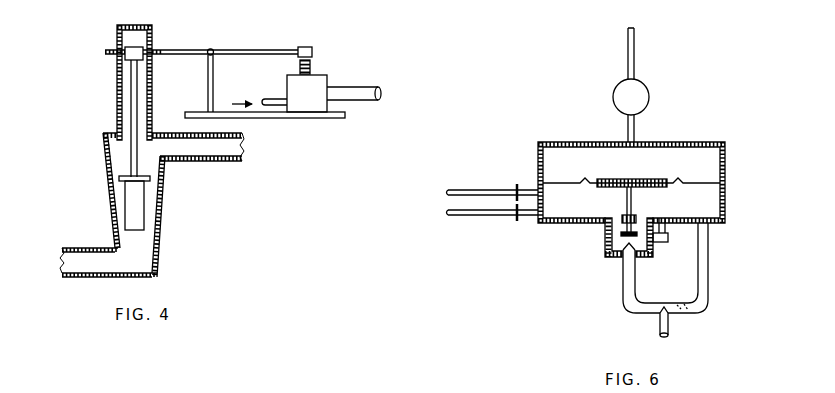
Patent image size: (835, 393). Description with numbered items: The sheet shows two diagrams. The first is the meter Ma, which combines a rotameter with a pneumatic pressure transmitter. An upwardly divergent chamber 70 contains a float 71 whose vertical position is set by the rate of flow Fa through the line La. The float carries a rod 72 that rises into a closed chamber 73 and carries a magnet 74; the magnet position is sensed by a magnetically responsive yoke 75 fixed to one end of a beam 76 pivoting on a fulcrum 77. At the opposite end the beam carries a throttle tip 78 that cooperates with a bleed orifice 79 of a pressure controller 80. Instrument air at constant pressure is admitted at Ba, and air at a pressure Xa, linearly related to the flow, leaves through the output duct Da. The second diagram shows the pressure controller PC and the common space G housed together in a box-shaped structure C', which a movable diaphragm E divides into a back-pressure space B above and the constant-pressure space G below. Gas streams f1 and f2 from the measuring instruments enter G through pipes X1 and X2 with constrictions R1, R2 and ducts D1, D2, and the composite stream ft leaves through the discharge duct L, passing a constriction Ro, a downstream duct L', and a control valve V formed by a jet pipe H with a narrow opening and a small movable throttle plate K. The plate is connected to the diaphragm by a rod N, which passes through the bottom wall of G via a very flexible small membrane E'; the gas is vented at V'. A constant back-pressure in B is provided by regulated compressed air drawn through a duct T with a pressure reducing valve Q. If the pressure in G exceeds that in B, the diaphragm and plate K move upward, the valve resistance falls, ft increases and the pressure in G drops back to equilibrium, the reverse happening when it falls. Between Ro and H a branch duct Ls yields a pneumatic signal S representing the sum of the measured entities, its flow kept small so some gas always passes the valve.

In FIG. 4, the upwardly divergent chamber 70 is at (160, 232).
In FIG. 4, the float 71 is at (148, 177).
In FIG. 4, the rod 72 is at (130, 160).
In FIG. 4, the closed chamber 73 is at (117, 93).
In FIG. 4, the magnet 74 is at (127, 47).
In FIG. 4, the magnetically responsive yoke 75 is at (105, 53).
In FIG. 4, the beam 76 is at (259, 49).
In FIG. 4, the fulcrum 77 is at (211, 49).
In FIG. 4, the throttle tip 78 is at (306, 47).
In FIG. 4, the bleed orifice 79 is at (313, 68).
In FIG. 4, the pressure controller 80 is at (318, 108).
In FIG. 4, the meter Ma is at (97, 196).
In FIG. 4, the flow Fa is at (40, 262).
In FIG. 4, the line La is at (232, 163).
In FIG. 4, the instrument air inlet Ba is at (273, 98).
In FIG. 4, the output duct Da is at (360, 86).
In FIG. 4, the output pressure Xa is at (377, 117).
In FIG. 6, the pressure controller PC is at (654, 168).
In FIG. 6, the box-shaped structure C' is at (631, 172).
In FIG. 6, the back-pressure space B is at (573, 171).
In FIG. 6, the common constant-pressure space G is at (574, 211).
In FIG. 6, the duct T is at (628, 52).
In FIG. 6, the pressure reducing valve Q is at (613, 92).
In FIG. 6, the movable diaphragm E is at (631, 174).
In FIG. 6, the flexible membrane E' is at (617, 211).
In FIG. 6, the control valve V is at (587, 237).
In FIG. 6, the vent outlet V' is at (669, 219).
In FIG. 6, the rod N is at (623, 232).
In FIG. 6, the throttle plate K is at (622, 240).
In FIG. 6, the jet pipe H is at (628, 248).
In FIG. 6, the downstream duct L' is at (660, 268).
In FIG. 6, the discharge duct L is at (699, 268).
In FIG. 6, the branch duct Ls is at (658, 333).
In FIG. 6, the pneumatic pressure signal S is at (679, 331).
In FIG. 6, the constriction Ro is at (692, 313).
In FIG. 6, the first input pipe X1 is at (491, 180).
In FIG. 6, the second input pipe X2 is at (489, 226).
In FIG. 6, the first restriction R1 is at (516, 183).
In FIG. 6, the second restriction R2 is at (516, 222).
In FIG. 6, the first conduit D1 is at (497, 188).
In FIG. 6, the second conduit D2 is at (482, 220).
In FIG. 6, the first input flow f1 is at (432, 192).
In FIG. 6, the second input flow f2 is at (432, 213).
In FIG. 6, the composite stream ft is at (678, 250).